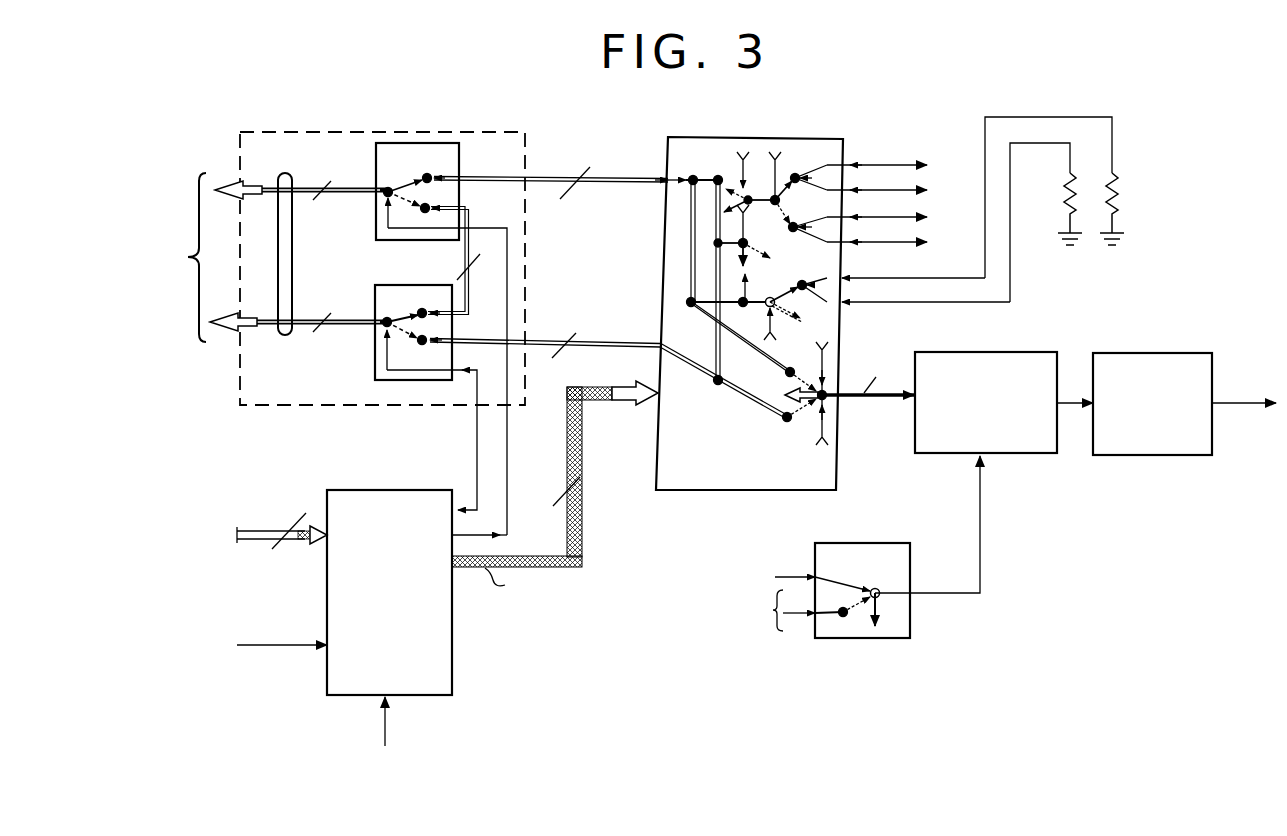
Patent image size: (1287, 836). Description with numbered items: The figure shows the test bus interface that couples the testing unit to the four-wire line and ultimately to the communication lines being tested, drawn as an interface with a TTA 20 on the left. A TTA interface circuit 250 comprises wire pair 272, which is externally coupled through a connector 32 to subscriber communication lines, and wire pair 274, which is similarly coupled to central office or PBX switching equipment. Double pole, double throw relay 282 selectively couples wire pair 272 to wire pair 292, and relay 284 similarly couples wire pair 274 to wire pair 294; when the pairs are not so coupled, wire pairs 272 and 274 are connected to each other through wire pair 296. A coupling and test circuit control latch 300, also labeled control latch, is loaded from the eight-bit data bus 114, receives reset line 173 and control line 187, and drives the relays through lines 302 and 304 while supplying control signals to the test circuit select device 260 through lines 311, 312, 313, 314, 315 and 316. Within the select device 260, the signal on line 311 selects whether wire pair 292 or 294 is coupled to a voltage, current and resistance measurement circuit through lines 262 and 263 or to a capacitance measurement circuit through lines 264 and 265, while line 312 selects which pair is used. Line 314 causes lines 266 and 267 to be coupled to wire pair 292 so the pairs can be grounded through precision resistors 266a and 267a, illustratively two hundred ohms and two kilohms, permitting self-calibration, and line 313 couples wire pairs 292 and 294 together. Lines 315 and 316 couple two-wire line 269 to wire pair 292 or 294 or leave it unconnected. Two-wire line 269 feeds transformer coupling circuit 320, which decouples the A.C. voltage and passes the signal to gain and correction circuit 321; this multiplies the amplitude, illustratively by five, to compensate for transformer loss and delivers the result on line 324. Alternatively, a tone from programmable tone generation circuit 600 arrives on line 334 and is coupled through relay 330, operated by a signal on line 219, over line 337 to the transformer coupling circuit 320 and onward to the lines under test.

The TTA interface 20 is at (131, 257).
The connector 32 is at (291, 176).
The data bus 114 is at (250, 528).
The reset line 173 is at (260, 644).
The control line 187 is at (385, 728).
The control line 219 is at (789, 575).
The TTA interface circuit 250 is at (497, 132).
The test circuit select device 260 is at (815, 137).
The line 262 is at (870, 165).
The line 263 is at (902, 190).
The line 264 is at (905, 217).
The line 265 is at (905, 242).
The line 266 is at (900, 278).
The precision resistor 266a is at (1118, 190).
The line 267 is at (876, 302).
The precision resistor 267a is at (1065, 212).
The two-wire line 269 is at (886, 388).
The wire pair 272 is at (264, 188).
The wire pair 274 is at (262, 326).
The double pole, double throw relay 282 is at (418, 143).
The double pole, double throw relay 284 is at (394, 285).
The wire pair 292 is at (615, 183).
The wire pair 294 is at (616, 344).
The wire pair 296 is at (463, 263).
The control latch 300 is at (404, 490).
The line 302 is at (476, 452).
The line 304 is at (501, 474).
The control line 311 is at (780, 166).
The control line 312 is at (741, 162).
The control line 313 is at (755, 236).
The control line 314 is at (768, 330).
The control line 315 is at (798, 324).
The control line 316 is at (830, 427).
The transformer coupling circuit 320 is at (1000, 352).
The gain and correction circuit 321 is at (1162, 354).
The line 324 is at (1238, 403).
The relay 330 is at (884, 543).
The line 334 is at (793, 630).
The line 337 is at (982, 566).
The programmable tone generation circuit 600 is at (685, 604).